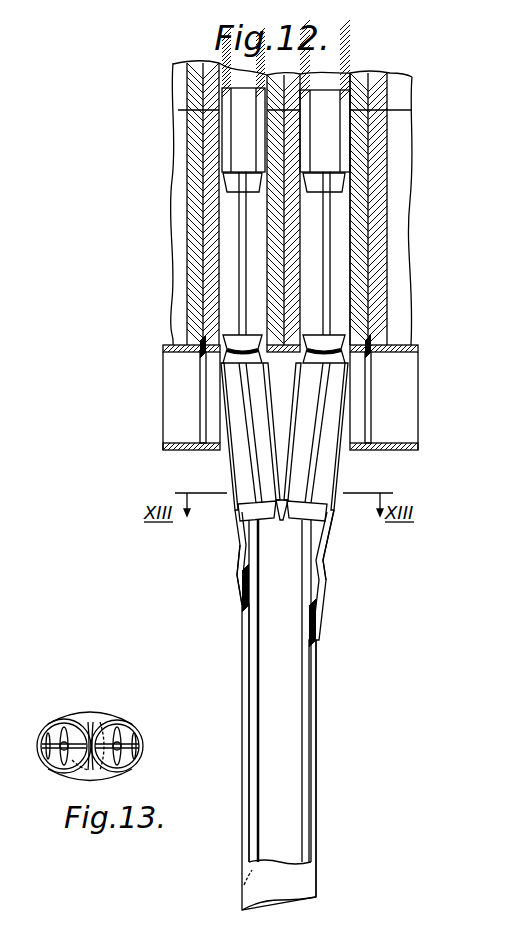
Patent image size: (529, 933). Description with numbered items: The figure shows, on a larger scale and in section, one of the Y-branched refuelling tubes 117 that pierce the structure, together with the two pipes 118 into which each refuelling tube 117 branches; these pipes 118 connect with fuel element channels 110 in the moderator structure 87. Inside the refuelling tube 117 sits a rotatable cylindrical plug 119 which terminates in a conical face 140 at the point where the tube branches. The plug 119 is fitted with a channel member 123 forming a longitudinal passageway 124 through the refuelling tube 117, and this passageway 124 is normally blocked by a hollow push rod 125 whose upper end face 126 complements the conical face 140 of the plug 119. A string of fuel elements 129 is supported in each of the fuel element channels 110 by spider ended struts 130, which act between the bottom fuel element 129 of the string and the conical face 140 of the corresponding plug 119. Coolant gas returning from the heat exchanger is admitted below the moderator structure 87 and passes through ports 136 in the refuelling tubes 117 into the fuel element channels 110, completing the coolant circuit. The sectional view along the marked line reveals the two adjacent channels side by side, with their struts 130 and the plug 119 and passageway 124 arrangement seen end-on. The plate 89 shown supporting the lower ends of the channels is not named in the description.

In FIG. 12, the moderator structure 87 is at (402, 165).
In FIG. 12, the plate 89 is at (405, 367).
In FIG. 12, the fuel element channels 110 is at (344, 303).
In FIG. 12, the refuelling tubes 117 is at (313, 780).
In FIG. 13, the refuelling tubes 117 is at (92, 714).
In FIG. 12, the pipes 118 is at (330, 523).
In FIG. 13, the pipes 118 is at (143, 752).
In FIG. 12, the rotatable cylindrical plug 119 is at (307, 627).
In FIG. 13, the rotatable cylindrical plug 119 is at (107, 725).
In FIG. 12, the channel member 123 is at (303, 718).
In FIG. 13, the longitudinal passageway 124 is at (77, 768).
In FIG. 12, the hollow push rods 125 is at (280, 813).
In FIG. 13, the hollow push rods 125 is at (105, 773).
In FIG. 12, the upper end faces 126 is at (281, 518).
In FIG. 12, the fuel elements 129 is at (329, 134).
In FIG. 12, the spider ended struts 130 is at (244, 235).
In FIG. 13, the spider ended struts 130 is at (127, 765).
In FIG. 12, the ports 136 is at (238, 572).
In FIG. 13, the ports 136 is at (52, 713).
In FIG. 12, the conical face 140 is at (253, 520).
In FIG. 13, the conical face 140 is at (78, 716).